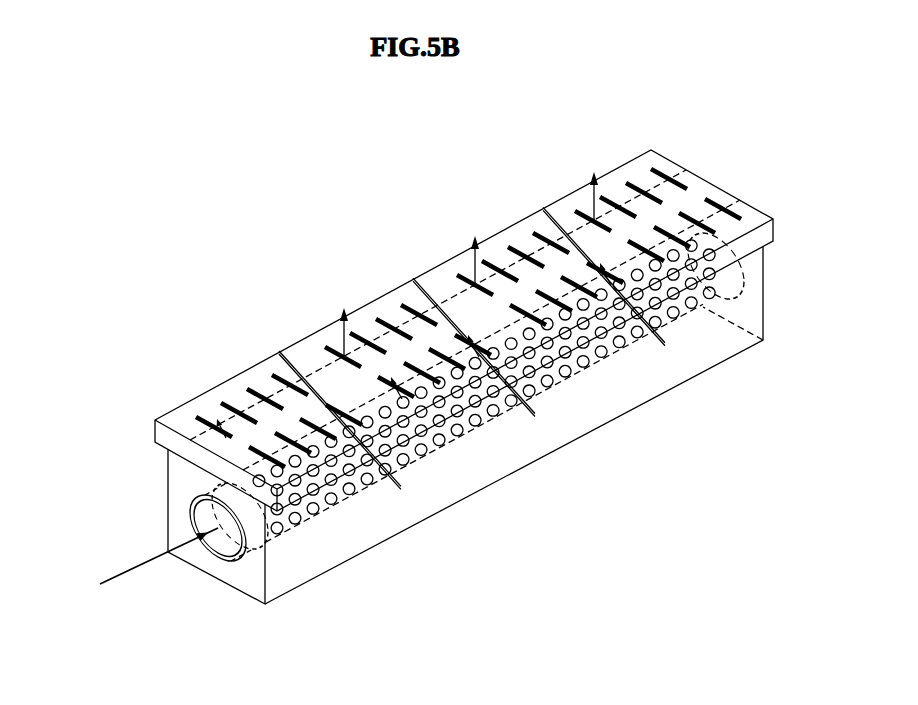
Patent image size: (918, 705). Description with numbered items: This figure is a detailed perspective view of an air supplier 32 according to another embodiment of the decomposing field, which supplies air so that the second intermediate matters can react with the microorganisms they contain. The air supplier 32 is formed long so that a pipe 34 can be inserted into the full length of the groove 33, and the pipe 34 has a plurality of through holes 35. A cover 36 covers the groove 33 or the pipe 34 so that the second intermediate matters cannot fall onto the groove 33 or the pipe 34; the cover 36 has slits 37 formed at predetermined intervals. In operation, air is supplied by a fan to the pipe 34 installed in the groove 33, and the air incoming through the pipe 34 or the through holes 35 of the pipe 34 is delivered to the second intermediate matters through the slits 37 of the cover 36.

The air supplier 32 is at (198, 343).
The groove 33 is at (253, 588).
The pipe 34 is at (207, 495).
The through holes 35 is at (507, 408).
The cover 36 is at (703, 186).
The slits 37 is at (369, 334).